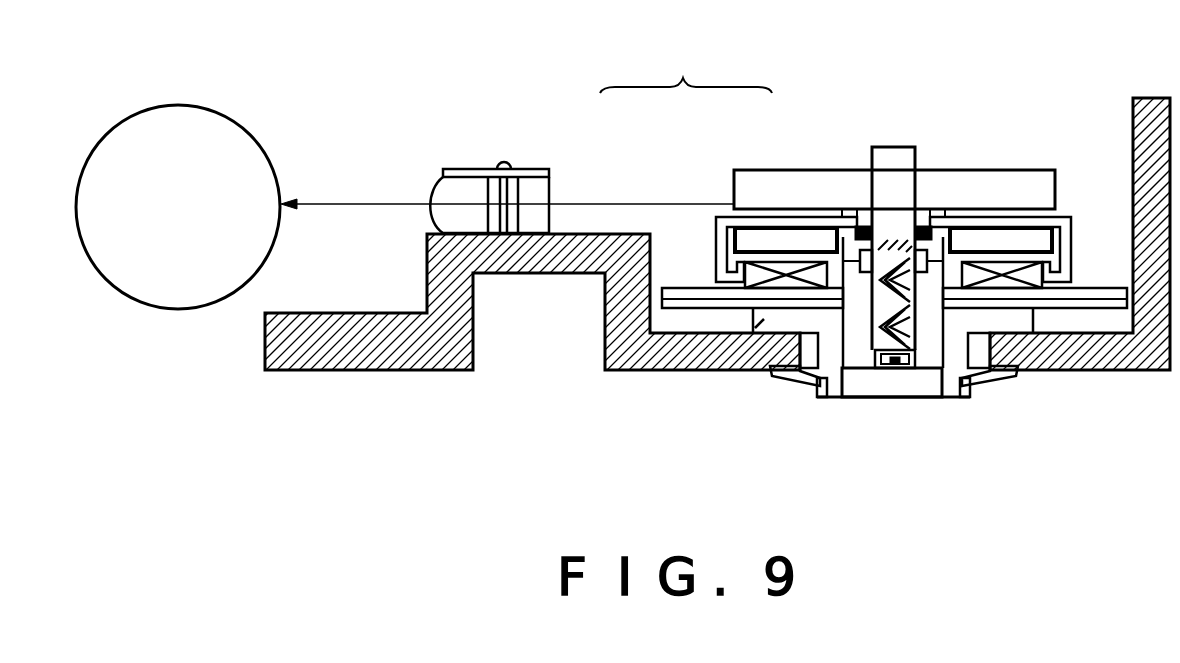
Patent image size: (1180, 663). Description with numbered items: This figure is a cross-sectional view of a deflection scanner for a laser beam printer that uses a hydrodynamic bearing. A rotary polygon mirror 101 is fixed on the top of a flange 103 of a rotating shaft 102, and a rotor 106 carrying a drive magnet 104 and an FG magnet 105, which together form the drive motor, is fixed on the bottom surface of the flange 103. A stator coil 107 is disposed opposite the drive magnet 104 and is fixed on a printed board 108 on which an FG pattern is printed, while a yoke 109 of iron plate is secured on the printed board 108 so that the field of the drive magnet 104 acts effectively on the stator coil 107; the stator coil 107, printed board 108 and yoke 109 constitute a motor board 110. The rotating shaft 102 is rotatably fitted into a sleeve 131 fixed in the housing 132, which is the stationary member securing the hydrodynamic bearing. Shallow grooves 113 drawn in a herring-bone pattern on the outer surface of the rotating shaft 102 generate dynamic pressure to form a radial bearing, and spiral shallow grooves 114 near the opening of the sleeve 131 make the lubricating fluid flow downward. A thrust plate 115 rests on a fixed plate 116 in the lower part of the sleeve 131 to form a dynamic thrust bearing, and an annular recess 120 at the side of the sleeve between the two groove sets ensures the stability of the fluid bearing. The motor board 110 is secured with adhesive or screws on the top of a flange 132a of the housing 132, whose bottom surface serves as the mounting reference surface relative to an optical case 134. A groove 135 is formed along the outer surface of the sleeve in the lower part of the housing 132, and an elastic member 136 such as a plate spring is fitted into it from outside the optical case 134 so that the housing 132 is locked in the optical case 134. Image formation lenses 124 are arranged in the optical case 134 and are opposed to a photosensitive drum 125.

The rotary polygon mirror 101 is at (962, 188).
The rotating shaft 102 is at (884, 168).
The flange 103 is at (866, 240).
The drive magnet 104 is at (992, 243).
The FG magnet 105 is at (1068, 277).
The rotor 106 is at (1062, 258).
The stator coil 107 is at (780, 278).
The printed board 108 is at (690, 292).
The yoke 109 is at (677, 302).
The motor board 110 is at (686, 58).
The shallow grooves 113 is at (873, 338).
The shallow grooves 114 is at (840, 222).
The thrust plate 115 is at (880, 355).
The fixed plate 116 is at (901, 385).
The annular recess 120 is at (928, 240).
The image formation lenses 124 is at (460, 190).
The photosensitive drum 125 is at (238, 150).
The sleeve 131 is at (832, 350).
The housing 132 is at (1003, 320).
The flange 132a is at (720, 350).
The optical case 134 is at (630, 367).
The groove 135 is at (963, 400).
The elastic member 136 is at (987, 378).